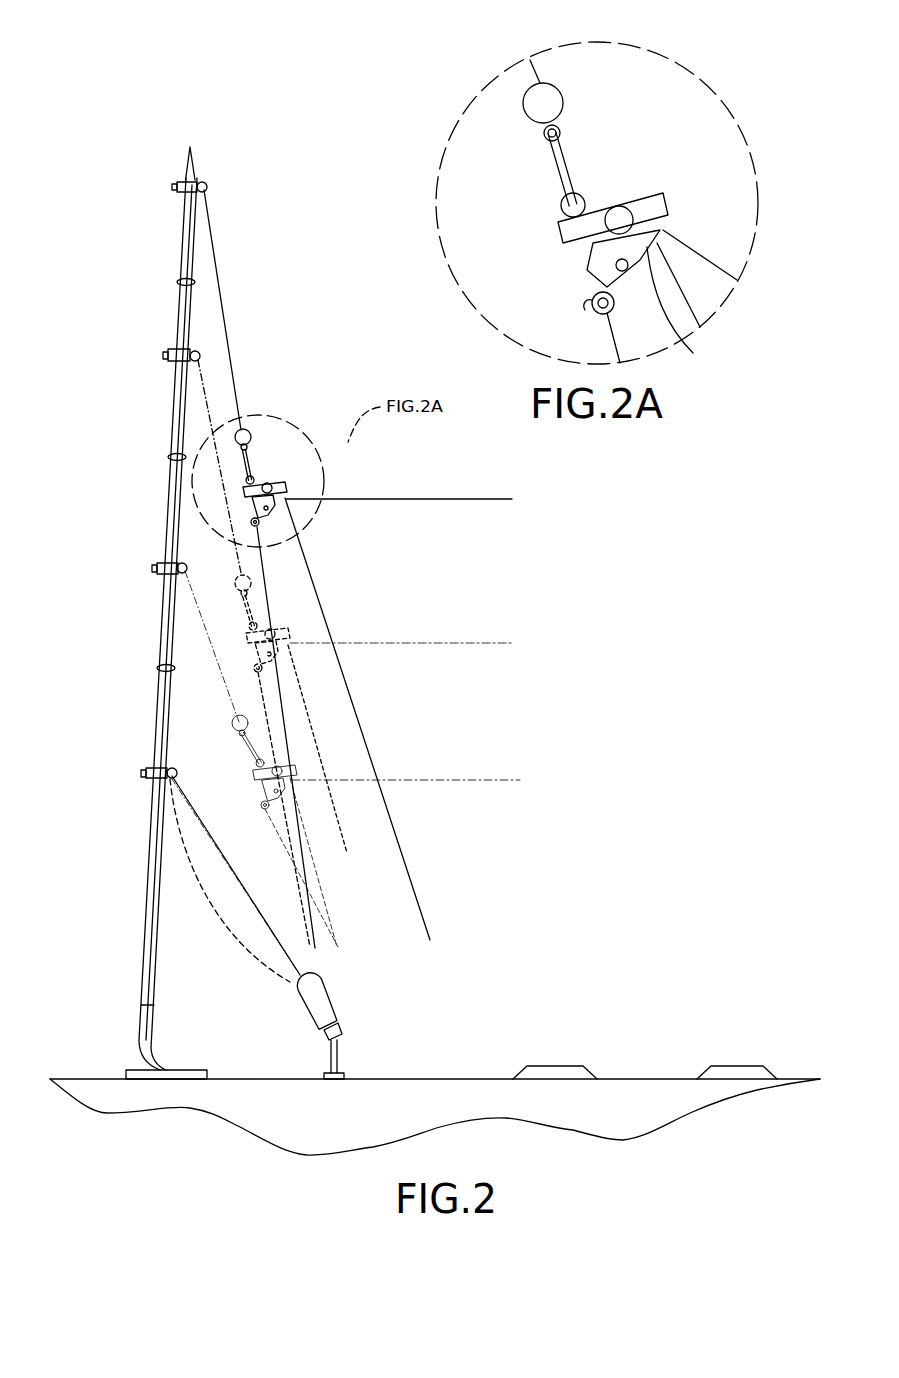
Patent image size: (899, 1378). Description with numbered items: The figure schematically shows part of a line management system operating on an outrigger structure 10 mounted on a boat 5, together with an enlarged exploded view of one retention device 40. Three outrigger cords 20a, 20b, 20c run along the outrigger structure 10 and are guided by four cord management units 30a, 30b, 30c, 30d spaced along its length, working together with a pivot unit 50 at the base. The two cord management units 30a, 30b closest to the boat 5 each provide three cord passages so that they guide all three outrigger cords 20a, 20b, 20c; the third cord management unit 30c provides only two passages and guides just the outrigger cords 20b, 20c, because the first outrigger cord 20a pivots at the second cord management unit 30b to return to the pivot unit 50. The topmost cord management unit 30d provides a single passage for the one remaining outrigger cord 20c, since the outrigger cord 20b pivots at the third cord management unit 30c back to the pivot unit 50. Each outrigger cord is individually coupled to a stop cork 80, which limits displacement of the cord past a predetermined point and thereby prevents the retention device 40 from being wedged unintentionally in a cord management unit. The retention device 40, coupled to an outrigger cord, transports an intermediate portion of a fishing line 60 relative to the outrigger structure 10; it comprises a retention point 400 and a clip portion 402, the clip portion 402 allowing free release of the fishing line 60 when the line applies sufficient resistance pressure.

In FIG. 2, the boat 5 is at (485, 1093).
In FIG. 2, the outrigger structure 10 is at (148, 883).
In FIG. 2, the first outrigger cord 20a is at (213, 637).
In FIG. 2, the second outrigger cord 20b is at (207, 404).
In FIG. 2, the third outrigger cord 20c is at (213, 215).
In FIG. 2, the first cord management unit 30a is at (158, 770).
In FIG. 2, the second cord management unit 30b is at (168, 512).
In FIG. 2, the third cord management unit 30c is at (178, 348).
In FIG. 2, the fourth cord management unit 30d is at (205, 183).
In FIG. 2, the retention device 40 is at (330, 446).
In FIG. 2, the pivot unit 50 is at (312, 983).
In FIG. 2, the fishing line 60 is at (460, 499).
In FIG. 2, the stop cork 80 is at (247, 428).
In FIG. 2A, the stop cork 80 is at (547, 105).
In FIG. 2, the retention point 400 is at (331, 473).
In FIG. 2A, the retention point 400 is at (677, 220).
In FIG. 2A, the clip portion 402 is at (692, 307).